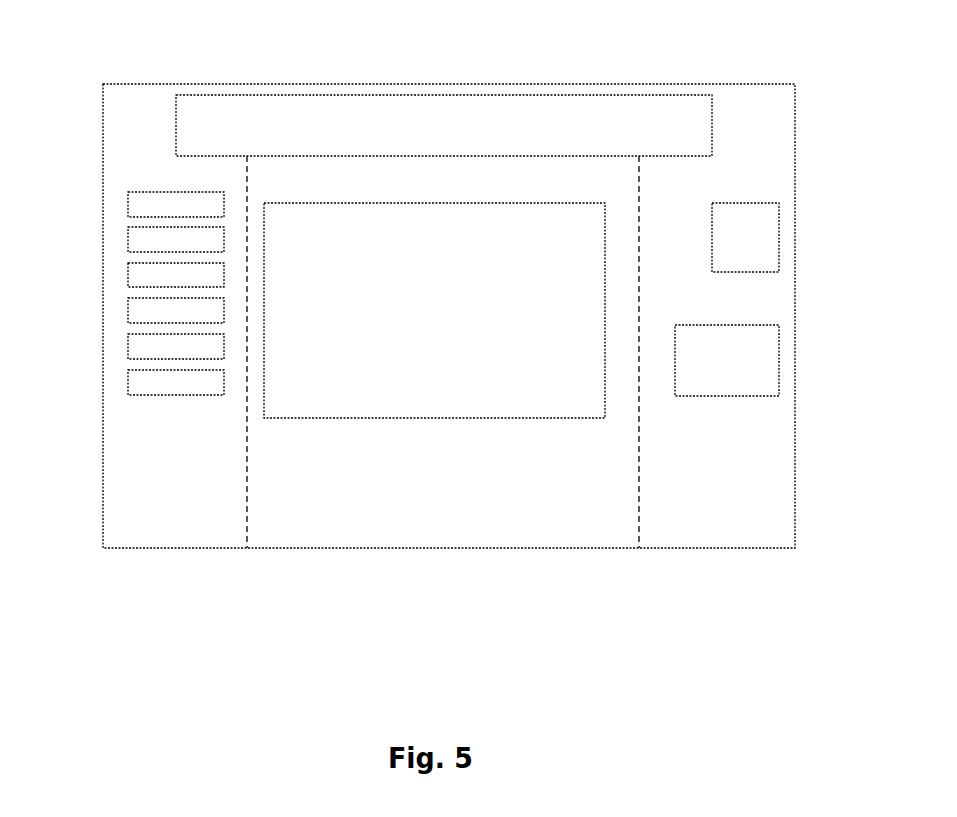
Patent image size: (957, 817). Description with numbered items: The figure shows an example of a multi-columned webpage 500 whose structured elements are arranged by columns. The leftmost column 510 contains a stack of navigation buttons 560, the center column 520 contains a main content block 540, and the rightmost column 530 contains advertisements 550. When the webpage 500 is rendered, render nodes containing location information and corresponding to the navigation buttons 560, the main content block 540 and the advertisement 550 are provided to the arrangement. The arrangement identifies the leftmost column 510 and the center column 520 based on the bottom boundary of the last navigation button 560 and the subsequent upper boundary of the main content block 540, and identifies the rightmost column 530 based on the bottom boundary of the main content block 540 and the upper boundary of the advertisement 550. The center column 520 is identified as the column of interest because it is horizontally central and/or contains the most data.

The webpage 500 is at (103, 84).
The leftmost column 510 is at (175, 503).
The center column 520 is at (464, 430).
The rightmost column 530 is at (747, 502).
The main content block 540 is at (556, 370).
The advertisement 550 is at (736, 202).
The navigation buttons 560 is at (147, 192).